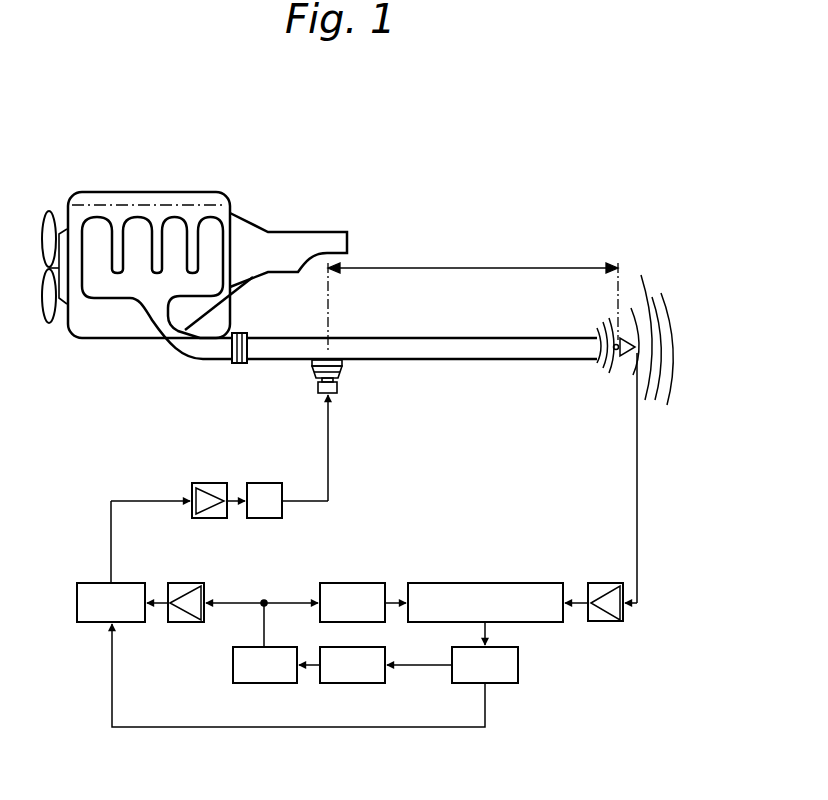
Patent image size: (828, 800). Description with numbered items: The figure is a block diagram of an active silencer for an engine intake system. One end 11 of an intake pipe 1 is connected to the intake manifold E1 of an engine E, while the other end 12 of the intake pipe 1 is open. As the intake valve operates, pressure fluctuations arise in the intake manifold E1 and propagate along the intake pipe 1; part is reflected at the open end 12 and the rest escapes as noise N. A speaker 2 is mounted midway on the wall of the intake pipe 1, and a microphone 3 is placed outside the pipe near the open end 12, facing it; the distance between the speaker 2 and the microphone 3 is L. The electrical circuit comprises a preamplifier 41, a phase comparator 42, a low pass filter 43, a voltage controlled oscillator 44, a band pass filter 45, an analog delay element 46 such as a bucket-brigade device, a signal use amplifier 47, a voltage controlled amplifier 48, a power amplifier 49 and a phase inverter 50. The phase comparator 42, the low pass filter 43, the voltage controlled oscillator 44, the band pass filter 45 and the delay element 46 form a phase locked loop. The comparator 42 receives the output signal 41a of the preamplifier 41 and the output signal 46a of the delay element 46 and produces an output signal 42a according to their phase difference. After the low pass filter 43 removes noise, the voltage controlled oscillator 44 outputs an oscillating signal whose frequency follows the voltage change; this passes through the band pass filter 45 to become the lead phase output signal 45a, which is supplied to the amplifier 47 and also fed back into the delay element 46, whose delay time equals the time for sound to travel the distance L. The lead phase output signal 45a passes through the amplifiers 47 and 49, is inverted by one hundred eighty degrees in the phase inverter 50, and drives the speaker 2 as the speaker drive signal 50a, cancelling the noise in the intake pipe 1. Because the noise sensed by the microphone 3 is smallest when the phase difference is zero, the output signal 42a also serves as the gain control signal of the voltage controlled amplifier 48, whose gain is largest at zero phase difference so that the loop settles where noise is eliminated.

The engine E is at (205, 190).
The intake manifold E1 is at (153, 307).
The one end of intake pipe 11 is at (268, 345).
The intake pipe 1 is at (412, 343).
The distance between speaker and microphone L is at (473, 299).
The speaker 2 is at (343, 373).
The open end of intake pipe 12 is at (602, 370).
The microphone 3 is at (625, 370).
The noise N is at (652, 327).
The speaker drive signal 50a is at (331, 443).
The power amplifier 49 is at (213, 485).
The phase inverter 50 is at (268, 485).
The voltage controlled amplifier (VCA) 48 is at (93, 587).
The signal use amplifier 47 is at (183, 587).
The lead phase output signal 45a is at (263, 594).
The analog delay element 46 is at (355, 583).
The output signal of delay element 46a is at (392, 598).
The phase comparator 42 is at (490, 583).
The output signal of preamplifier 41a is at (585, 600).
The preamplifier 41 is at (610, 583).
The output signal of phase comparator 42a is at (488, 632).
The band pass filter (BPF) 45 is at (267, 683).
The voltage controlled oscillator (VCO) 44 is at (353, 683).
The low pass filter (LPF) 43 is at (508, 678).